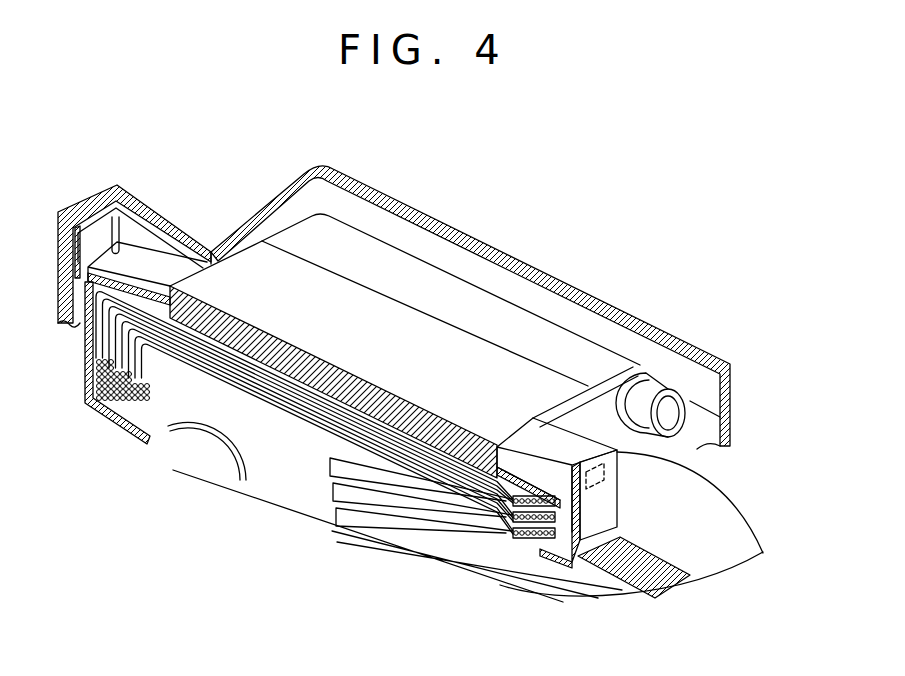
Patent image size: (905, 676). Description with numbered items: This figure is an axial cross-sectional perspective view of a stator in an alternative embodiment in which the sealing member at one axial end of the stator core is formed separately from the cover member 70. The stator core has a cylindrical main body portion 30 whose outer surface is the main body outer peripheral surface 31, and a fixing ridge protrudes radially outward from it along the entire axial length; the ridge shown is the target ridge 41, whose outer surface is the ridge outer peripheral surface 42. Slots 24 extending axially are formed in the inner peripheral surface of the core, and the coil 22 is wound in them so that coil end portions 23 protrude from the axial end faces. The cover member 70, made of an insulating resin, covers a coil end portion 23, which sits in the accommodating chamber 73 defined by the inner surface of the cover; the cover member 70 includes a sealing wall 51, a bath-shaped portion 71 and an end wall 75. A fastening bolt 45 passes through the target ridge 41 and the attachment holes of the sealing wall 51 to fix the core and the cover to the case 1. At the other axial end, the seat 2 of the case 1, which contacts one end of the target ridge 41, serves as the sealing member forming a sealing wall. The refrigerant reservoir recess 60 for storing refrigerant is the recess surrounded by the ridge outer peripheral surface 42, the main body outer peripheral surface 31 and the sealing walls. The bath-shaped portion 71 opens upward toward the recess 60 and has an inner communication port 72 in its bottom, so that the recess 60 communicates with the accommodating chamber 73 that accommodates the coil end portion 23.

The case 1 is at (470, 285).
The seat 2 is at (273, 228).
The coil 22 is at (257, 408).
The coil end portion 23 is at (137, 405).
The slot 24 is at (372, 500).
The main body portion 30 is at (297, 375).
The main body outer peripheral surface 31 is at (237, 293).
The target ridge 41 is at (470, 285).
The ridge outer peripheral surface 42 is at (350, 240).
The fastening bolt 45 is at (678, 401).
The sealing wall 51 is at (612, 368).
The refrigerant reservoir recess 60 is at (437, 320).
The cover member 70 is at (88, 412).
The bath-shaped portion 71 is at (164, 233).
The inner communication port 72 is at (560, 483).
The accommodating chamber 73 is at (187, 389).
The end wall 75 is at (83, 385).